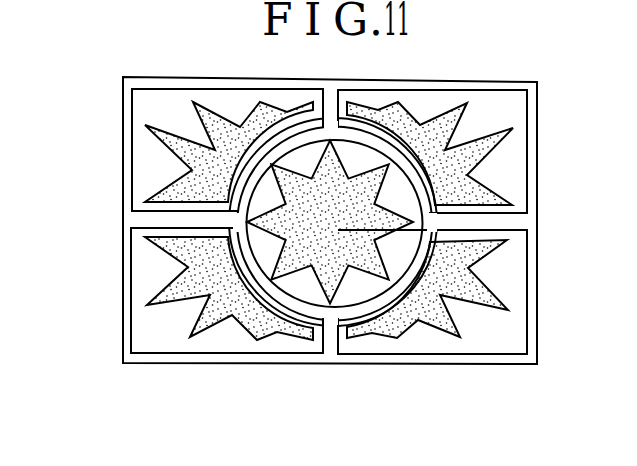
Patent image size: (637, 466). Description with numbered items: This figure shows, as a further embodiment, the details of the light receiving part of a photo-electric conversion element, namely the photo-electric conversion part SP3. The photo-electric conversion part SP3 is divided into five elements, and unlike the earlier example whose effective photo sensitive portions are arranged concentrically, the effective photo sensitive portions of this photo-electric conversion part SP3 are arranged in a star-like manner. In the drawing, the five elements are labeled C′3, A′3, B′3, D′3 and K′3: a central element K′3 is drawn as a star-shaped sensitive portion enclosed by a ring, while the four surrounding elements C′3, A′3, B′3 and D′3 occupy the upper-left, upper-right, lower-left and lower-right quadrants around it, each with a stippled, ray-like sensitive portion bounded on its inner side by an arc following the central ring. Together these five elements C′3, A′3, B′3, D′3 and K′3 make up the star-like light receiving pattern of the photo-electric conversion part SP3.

The photo-electric conversion part SP3 is at (93, 224).
The upper-left pattern section C′3 is at (227, 150).
The upper-right pattern section A′3 is at (432, 151).
The lower-left pattern section B′3 is at (227, 290).
The lower-right pattern section D′3 is at (432, 292).
The central star pattern section K′3 is at (335, 223).